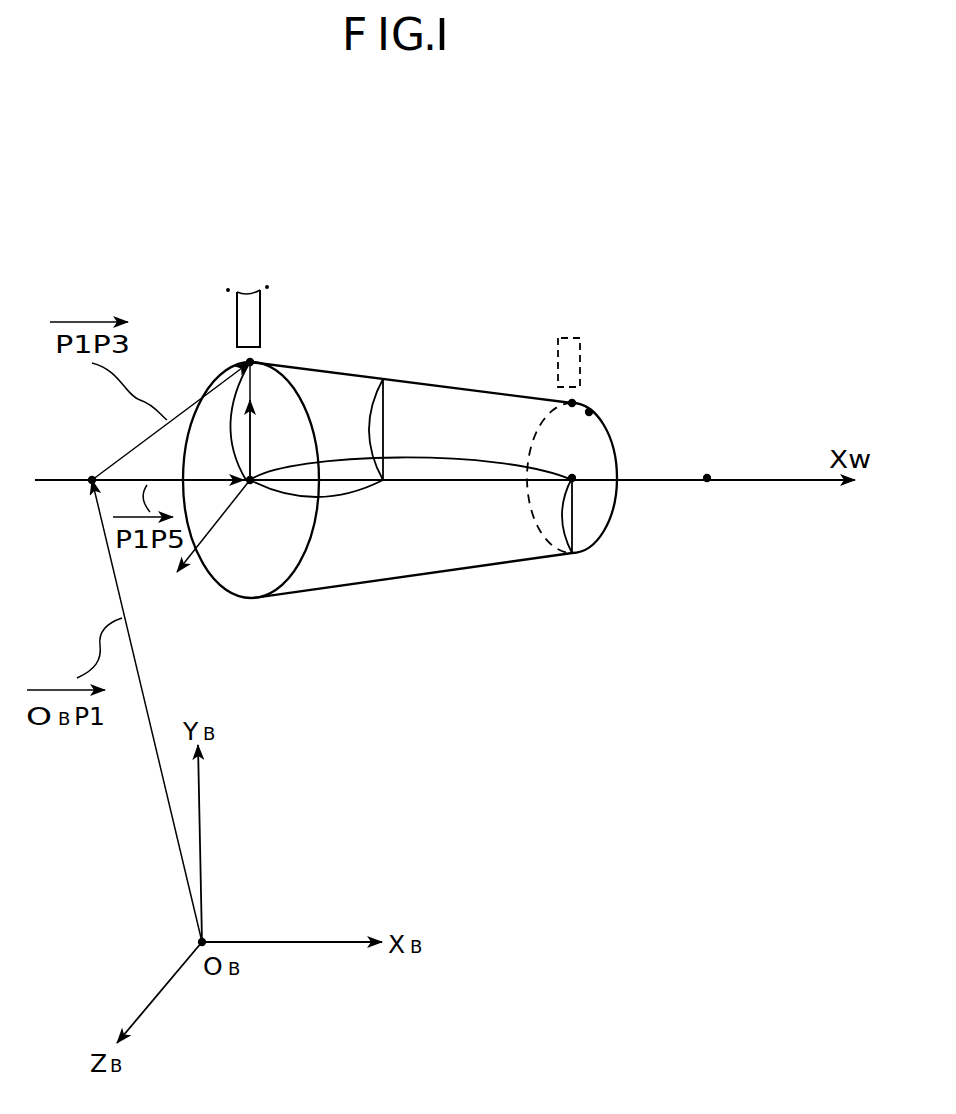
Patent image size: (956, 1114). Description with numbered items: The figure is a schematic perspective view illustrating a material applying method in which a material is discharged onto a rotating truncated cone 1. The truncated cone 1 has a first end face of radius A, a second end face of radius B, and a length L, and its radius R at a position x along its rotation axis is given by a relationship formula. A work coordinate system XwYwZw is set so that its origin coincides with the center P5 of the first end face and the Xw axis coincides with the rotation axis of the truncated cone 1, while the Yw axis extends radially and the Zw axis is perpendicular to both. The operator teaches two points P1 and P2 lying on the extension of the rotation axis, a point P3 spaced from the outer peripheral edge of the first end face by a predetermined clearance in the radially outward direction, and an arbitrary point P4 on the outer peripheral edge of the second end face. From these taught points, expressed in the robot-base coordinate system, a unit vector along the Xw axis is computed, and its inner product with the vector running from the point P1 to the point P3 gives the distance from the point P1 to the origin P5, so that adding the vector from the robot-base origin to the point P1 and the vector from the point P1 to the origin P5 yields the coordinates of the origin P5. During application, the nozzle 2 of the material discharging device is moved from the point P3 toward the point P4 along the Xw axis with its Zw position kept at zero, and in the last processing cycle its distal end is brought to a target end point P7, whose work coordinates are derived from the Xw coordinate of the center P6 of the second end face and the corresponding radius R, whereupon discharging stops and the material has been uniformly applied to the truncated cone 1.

The truncated cone 1 is at (395, 445).
The nozzle 2 is at (248, 318).
The taught point P1 is at (80, 465).
The taught point P2 is at (709, 464).
The taught point P3 is at (252, 361).
The taught point P4 is at (591, 411).
The center of the first end face P5 is at (250, 482).
The center of the second end face P6 is at (574, 480).
The target end point P7 is at (574, 402).